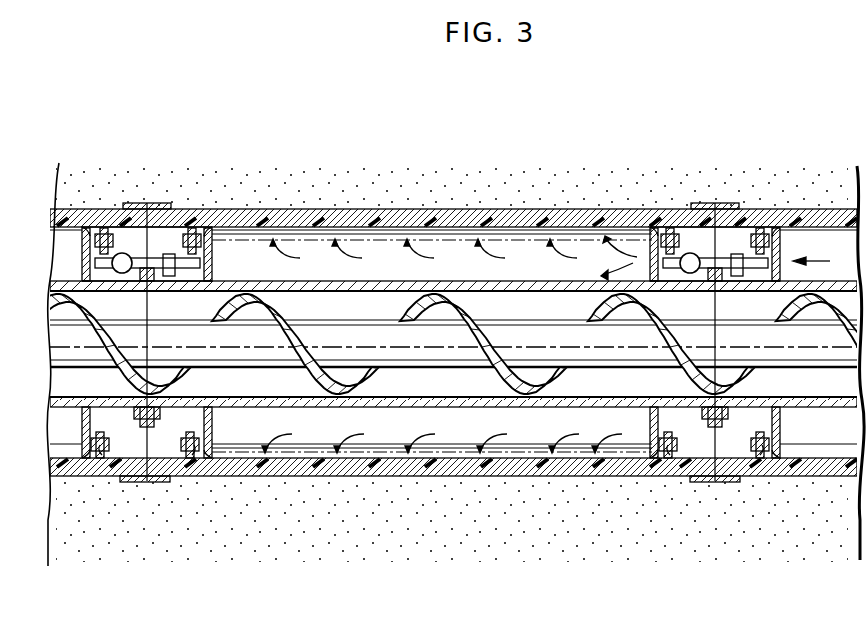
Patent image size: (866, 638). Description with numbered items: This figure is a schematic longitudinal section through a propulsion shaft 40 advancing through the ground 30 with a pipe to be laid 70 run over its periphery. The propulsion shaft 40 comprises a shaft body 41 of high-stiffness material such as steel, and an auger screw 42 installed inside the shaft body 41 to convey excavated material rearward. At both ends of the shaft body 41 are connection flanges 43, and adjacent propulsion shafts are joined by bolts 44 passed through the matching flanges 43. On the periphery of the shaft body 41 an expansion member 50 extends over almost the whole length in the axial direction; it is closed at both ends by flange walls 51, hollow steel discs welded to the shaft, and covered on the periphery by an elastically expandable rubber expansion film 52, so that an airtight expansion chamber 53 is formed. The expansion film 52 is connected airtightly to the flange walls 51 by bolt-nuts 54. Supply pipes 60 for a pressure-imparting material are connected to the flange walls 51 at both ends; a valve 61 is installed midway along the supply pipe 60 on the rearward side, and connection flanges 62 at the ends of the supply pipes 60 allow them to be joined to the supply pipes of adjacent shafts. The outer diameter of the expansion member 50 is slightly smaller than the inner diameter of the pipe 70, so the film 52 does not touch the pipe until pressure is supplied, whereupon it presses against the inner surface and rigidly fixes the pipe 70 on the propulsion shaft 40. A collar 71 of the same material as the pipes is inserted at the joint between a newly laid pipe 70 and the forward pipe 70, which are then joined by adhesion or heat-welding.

The ground 30 is at (481, 562).
The propulsion shaft 40 is at (596, 410).
The shaft body 41 is at (304, 412).
The auger screw 42 is at (402, 354).
The connection flange 43 is at (708, 425).
The bolt 44 is at (730, 420).
The expansion member 50 is at (332, 222).
The flange wall 51 is at (228, 247).
The expansion film 52 is at (388, 230).
The expansion chamber 53 is at (444, 274).
The bolt-nut 54 is at (193, 226).
The supply pipe 60 is at (147, 203).
The valve 61 is at (121, 258).
The connection flange 62 is at (782, 241).
The pipe to be laid 70 is at (280, 252).
The collar 71 is at (147, 481).